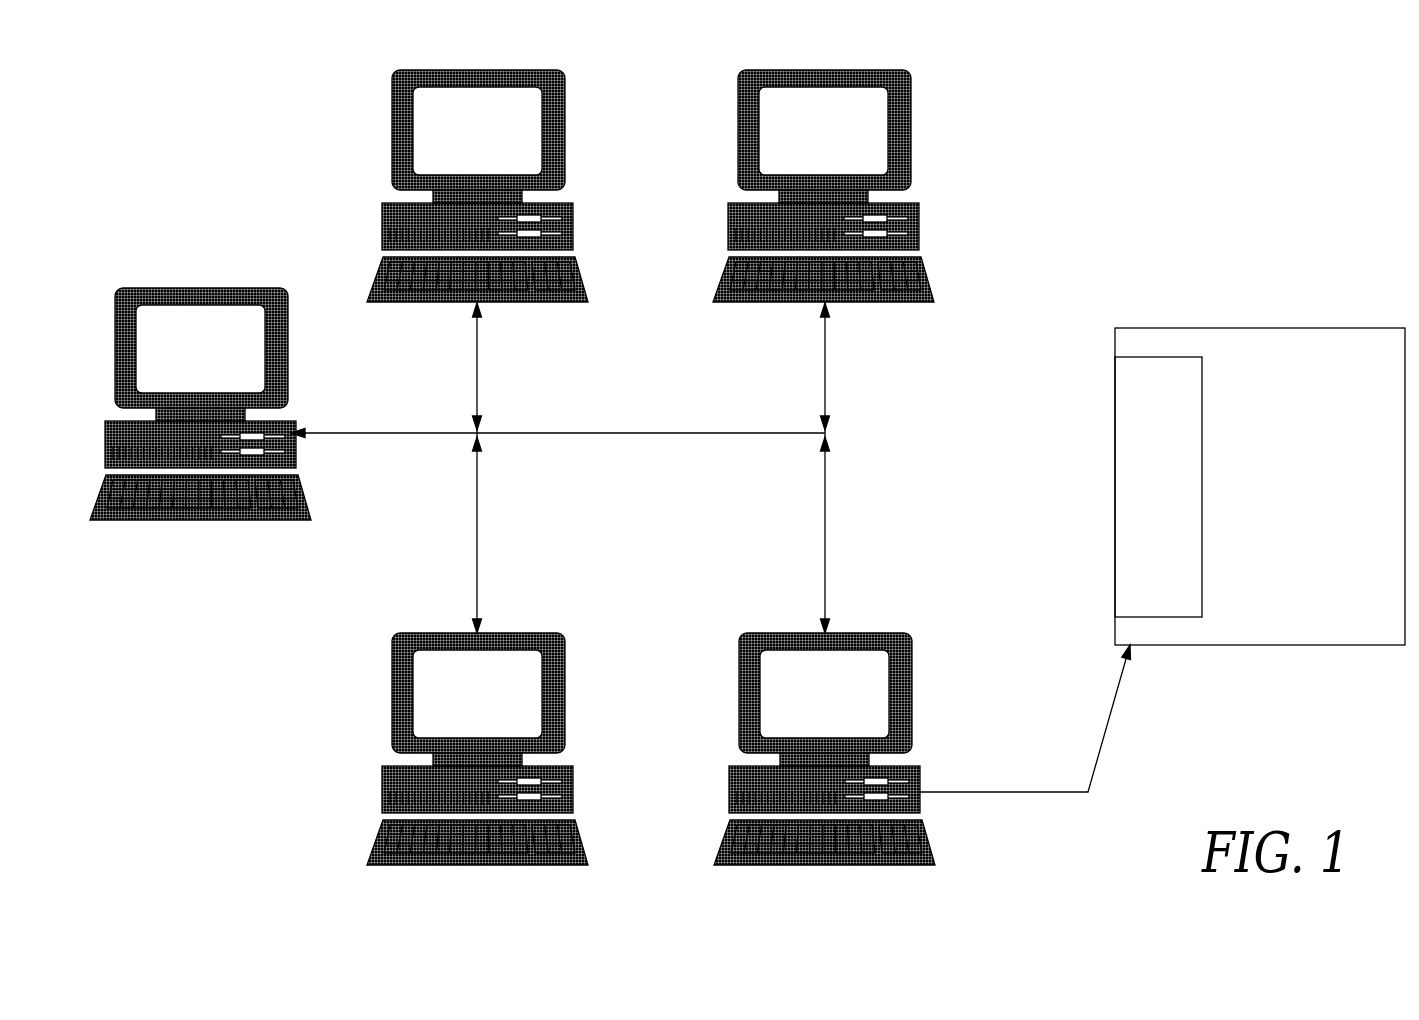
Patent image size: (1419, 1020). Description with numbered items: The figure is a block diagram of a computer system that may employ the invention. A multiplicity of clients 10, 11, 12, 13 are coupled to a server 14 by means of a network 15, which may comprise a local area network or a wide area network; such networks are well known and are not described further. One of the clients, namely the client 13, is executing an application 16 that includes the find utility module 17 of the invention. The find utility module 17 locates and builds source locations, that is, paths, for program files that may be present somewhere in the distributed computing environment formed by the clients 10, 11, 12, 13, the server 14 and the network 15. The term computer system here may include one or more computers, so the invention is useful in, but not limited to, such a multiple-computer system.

The client 10 is at (565, 113).
The client 11 is at (913, 110).
The client 12 is at (567, 662).
The client 13 is at (913, 675).
The server 14 is at (203, 288).
The network 15 is at (507, 433).
The application 16 is at (1318, 328).
The find utility module 17 is at (1202, 487).